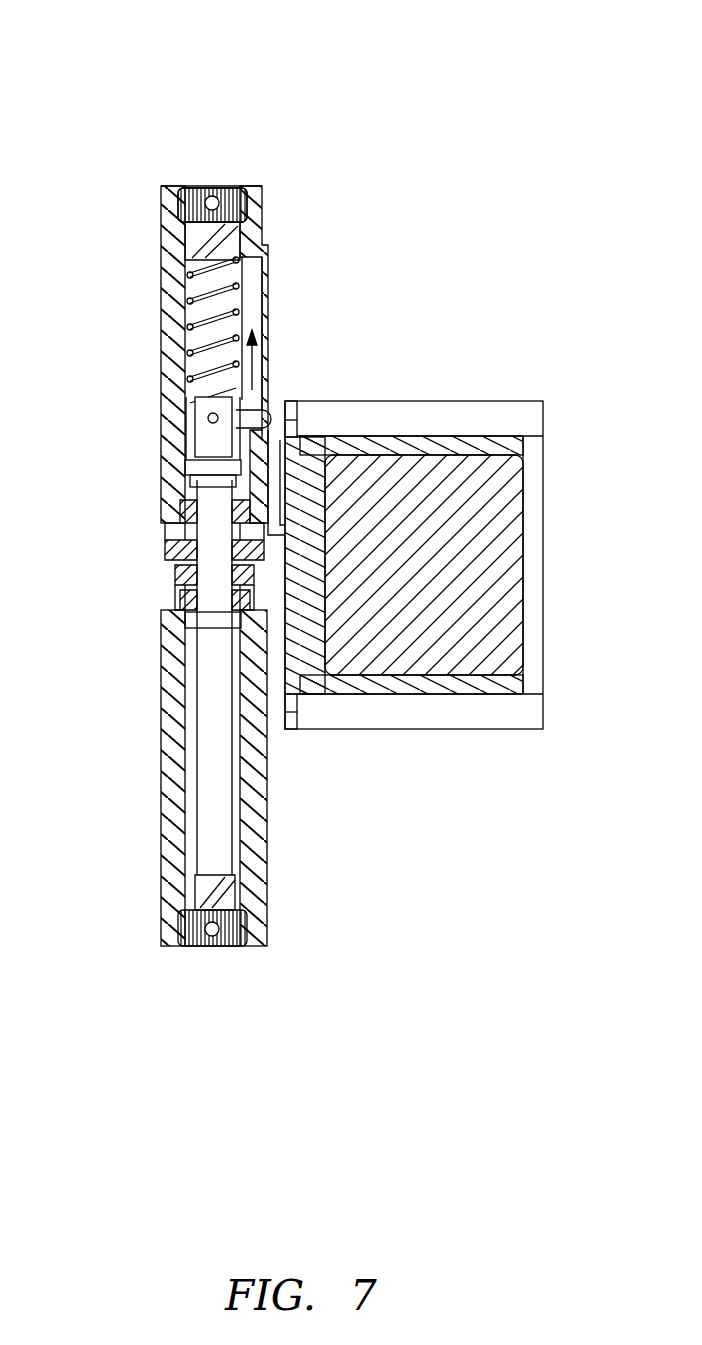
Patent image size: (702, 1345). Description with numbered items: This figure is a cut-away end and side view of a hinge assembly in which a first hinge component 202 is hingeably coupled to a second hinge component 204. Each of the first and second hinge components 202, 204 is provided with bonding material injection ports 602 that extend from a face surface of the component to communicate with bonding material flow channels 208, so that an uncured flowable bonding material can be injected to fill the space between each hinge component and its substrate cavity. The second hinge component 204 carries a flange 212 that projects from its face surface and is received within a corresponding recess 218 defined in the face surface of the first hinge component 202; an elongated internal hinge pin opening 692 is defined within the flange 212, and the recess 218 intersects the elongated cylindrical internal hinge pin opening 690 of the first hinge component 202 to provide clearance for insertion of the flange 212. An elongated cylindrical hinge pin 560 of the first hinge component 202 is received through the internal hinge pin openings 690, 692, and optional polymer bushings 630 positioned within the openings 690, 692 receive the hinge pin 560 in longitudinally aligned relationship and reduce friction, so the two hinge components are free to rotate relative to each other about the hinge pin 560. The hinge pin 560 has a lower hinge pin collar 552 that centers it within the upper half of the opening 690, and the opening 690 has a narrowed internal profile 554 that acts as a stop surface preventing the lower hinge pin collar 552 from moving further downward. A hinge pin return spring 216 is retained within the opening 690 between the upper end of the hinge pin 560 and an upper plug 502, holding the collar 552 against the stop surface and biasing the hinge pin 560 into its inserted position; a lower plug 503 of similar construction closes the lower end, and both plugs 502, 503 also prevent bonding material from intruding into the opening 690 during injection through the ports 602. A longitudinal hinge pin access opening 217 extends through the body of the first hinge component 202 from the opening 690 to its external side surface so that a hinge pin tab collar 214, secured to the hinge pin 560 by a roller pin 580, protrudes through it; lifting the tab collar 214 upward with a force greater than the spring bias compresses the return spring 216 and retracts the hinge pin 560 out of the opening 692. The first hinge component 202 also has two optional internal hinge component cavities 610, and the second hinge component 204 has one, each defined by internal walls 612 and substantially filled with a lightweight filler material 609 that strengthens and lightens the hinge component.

The first hinge component 202 is at (165, 186).
The second hinge component 204 is at (540, 401).
The bonding material flow channels 208 is at (232, 187).
The flange 212 is at (330, 578).
The hinge pin tab collar 214 is at (262, 420).
The hinge pin return spring 216 is at (190, 290).
The longitudinal hinge pin access opening 217 is at (255, 300).
The recess 218 is at (333, 612).
The upper plug 502 is at (190, 233).
The lower plug 503 is at (190, 900).
The lower hinge pin collar 552 is at (185, 465).
The narrowed internal profile 554 is at (185, 487).
The hinge pin 560 is at (205, 625).
The roller pin 580 is at (200, 418).
The bonding material injection ports 602 is at (212, 190).
The filler material 609 is at (510, 610).
The internal hinge component cavities 610 is at (505, 540).
The internal walls 612 is at (523, 445).
The bushings 630 is at (180, 605).
The internal hinge pin opening 690 is at (205, 745).
The internal hinge pin opening 692 is at (330, 535).